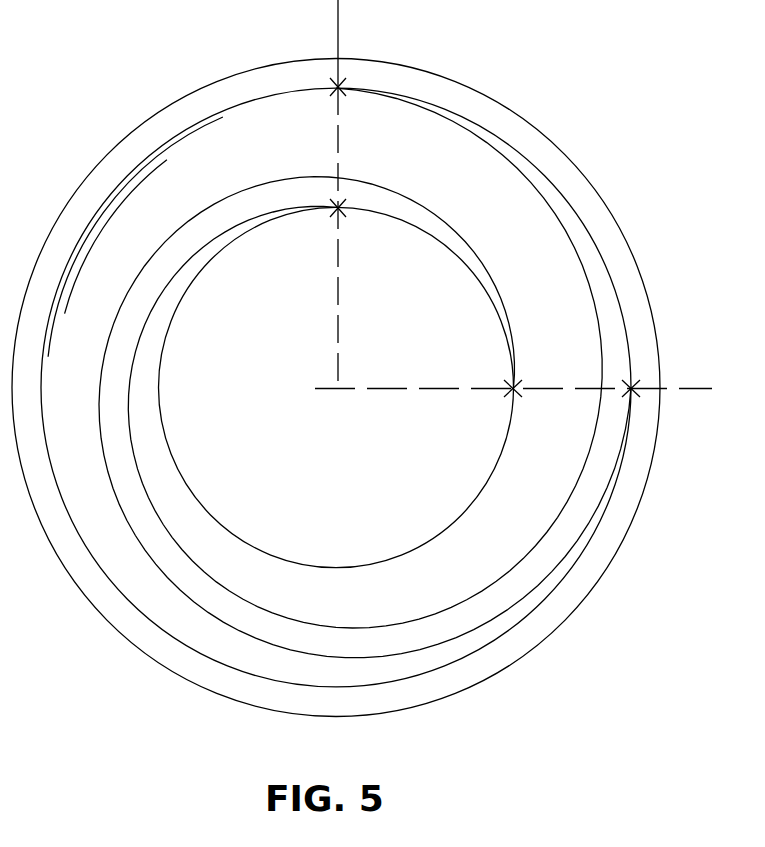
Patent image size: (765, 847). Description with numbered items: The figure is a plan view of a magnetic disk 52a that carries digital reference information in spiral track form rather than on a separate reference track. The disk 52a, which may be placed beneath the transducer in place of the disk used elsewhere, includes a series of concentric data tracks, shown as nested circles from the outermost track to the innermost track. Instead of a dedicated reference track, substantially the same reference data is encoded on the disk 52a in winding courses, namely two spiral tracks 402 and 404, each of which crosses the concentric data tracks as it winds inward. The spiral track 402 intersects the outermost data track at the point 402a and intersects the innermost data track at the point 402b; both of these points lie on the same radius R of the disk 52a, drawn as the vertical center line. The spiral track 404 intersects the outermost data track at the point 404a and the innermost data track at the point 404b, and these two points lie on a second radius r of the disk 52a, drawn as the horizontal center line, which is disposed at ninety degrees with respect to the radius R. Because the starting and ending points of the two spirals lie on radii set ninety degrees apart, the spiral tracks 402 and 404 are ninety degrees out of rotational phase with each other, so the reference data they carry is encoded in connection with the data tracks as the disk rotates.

The disk 52a is at (568, 130).
The spiral track 402 is at (567, 505).
The spiral track 404 is at (466, 240).
The point 402a is at (345, 92).
The point 402b is at (344, 213).
The point 404a is at (636, 384).
The point 404b is at (518, 382).
The radius R is at (340, 12).
The radius r is at (386, 402).